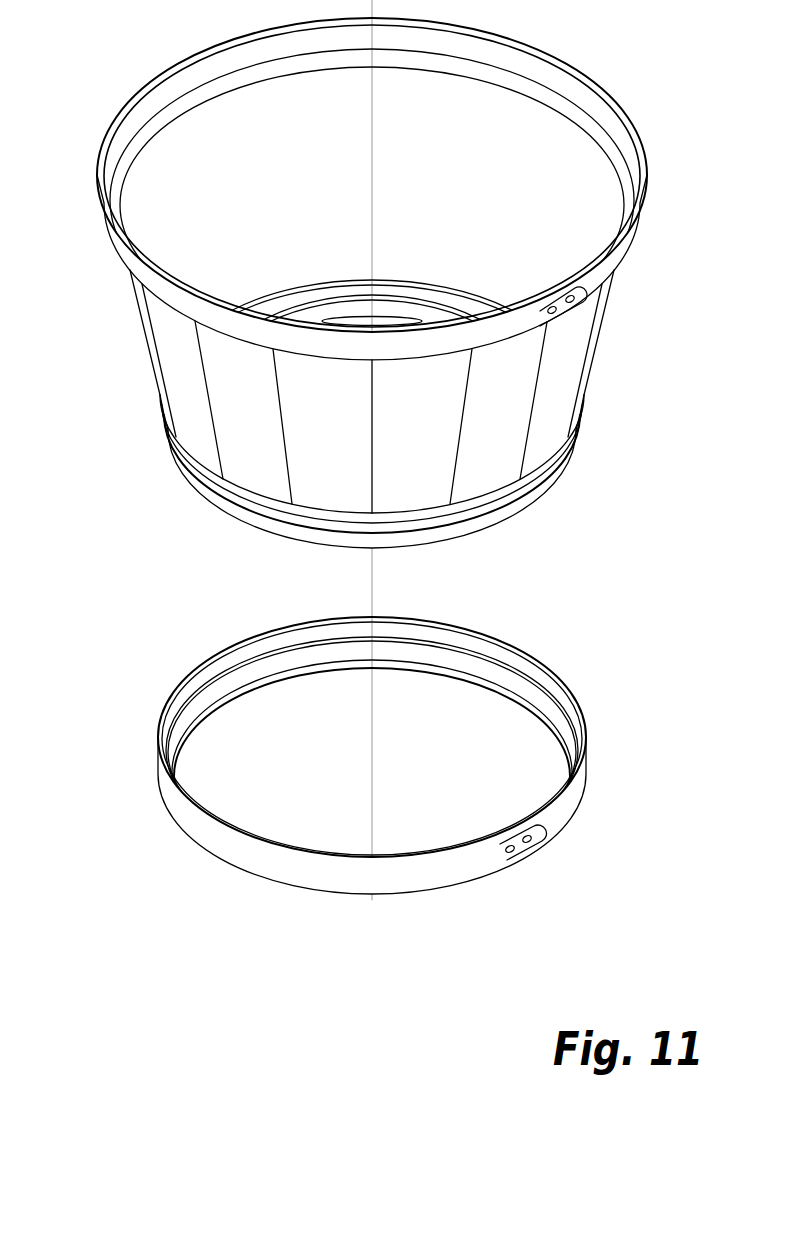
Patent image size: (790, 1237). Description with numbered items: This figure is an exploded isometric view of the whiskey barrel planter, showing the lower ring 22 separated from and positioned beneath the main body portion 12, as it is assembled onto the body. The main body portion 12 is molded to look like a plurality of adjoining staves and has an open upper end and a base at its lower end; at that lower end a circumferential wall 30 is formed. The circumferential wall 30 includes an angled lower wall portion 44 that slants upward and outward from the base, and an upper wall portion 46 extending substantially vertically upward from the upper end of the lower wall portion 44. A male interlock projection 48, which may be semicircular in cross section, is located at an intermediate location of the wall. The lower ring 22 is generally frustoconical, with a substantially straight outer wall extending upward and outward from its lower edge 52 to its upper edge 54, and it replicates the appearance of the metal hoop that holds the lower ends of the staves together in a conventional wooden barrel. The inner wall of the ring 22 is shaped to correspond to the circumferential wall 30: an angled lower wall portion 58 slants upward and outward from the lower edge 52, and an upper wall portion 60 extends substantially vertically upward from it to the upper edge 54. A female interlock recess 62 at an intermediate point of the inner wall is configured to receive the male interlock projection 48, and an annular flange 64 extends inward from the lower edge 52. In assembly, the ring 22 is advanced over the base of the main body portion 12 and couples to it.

The main body portion 12 is at (600, 363).
The lower ring 22 is at (341, 777).
The circumferential wall 30 is at (384, 465).
The lower wall portion 44 is at (207, 495).
The upper wall portion 46 is at (177, 457).
The male interlock projection 48 is at (553, 473).
The lower edge 52 is at (566, 692).
The upper edge 54 is at (307, 890).
The lower wall portion 58 is at (217, 693).
The upper wall portion 60 is at (179, 708).
The female interlock recess 62 is at (497, 660).
The annular flange 64 is at (332, 670).